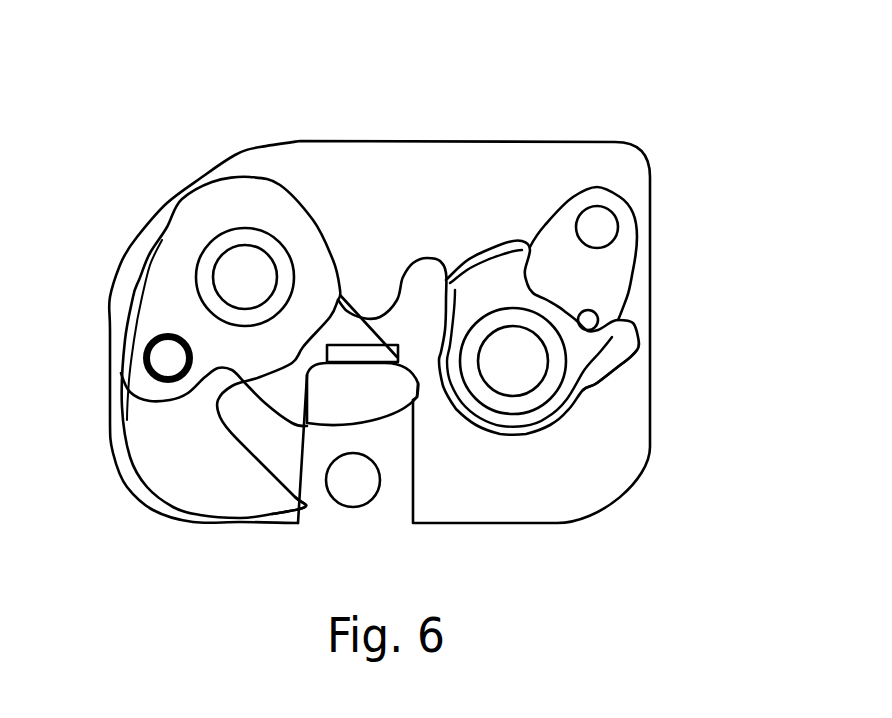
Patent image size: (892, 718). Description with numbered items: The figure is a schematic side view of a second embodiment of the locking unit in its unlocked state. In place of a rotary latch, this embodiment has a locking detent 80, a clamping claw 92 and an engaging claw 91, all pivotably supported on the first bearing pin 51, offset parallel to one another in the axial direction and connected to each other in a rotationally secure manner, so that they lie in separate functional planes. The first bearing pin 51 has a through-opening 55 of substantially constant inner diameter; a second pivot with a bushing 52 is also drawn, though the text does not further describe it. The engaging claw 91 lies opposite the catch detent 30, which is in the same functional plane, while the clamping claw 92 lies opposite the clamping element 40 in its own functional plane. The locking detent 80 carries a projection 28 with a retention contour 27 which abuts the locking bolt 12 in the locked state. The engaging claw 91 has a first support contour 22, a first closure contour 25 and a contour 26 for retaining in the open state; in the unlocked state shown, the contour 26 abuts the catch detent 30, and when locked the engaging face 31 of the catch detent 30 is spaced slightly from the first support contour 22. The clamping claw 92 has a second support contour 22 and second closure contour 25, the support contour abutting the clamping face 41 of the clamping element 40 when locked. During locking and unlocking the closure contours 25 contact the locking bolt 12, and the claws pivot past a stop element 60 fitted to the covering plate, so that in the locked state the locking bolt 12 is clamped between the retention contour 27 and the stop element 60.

The locking bolt 12 is at (353, 478).
The support contour 22 is at (410, 372).
The closure contour 25 is at (345, 315).
The contour for retaining in the open state 26 is at (427, 257).
The retention contour 27 is at (267, 473).
The projection 28 is at (217, 483).
The catch detent 30 is at (608, 265).
The engaging face 31 is at (498, 250).
The clamping element 40 is at (510, 278).
The clamping face 41 is at (465, 255).
The first bearing pin 51 is at (215, 241).
The pawl bushing 52 is at (510, 400).
The through-opening 55 is at (235, 287).
The stop element 60 is at (372, 357).
The locking detent 80 is at (153, 431).
The engaging claw 91 is at (414, 312).
The clamping claw 92 is at (285, 382).